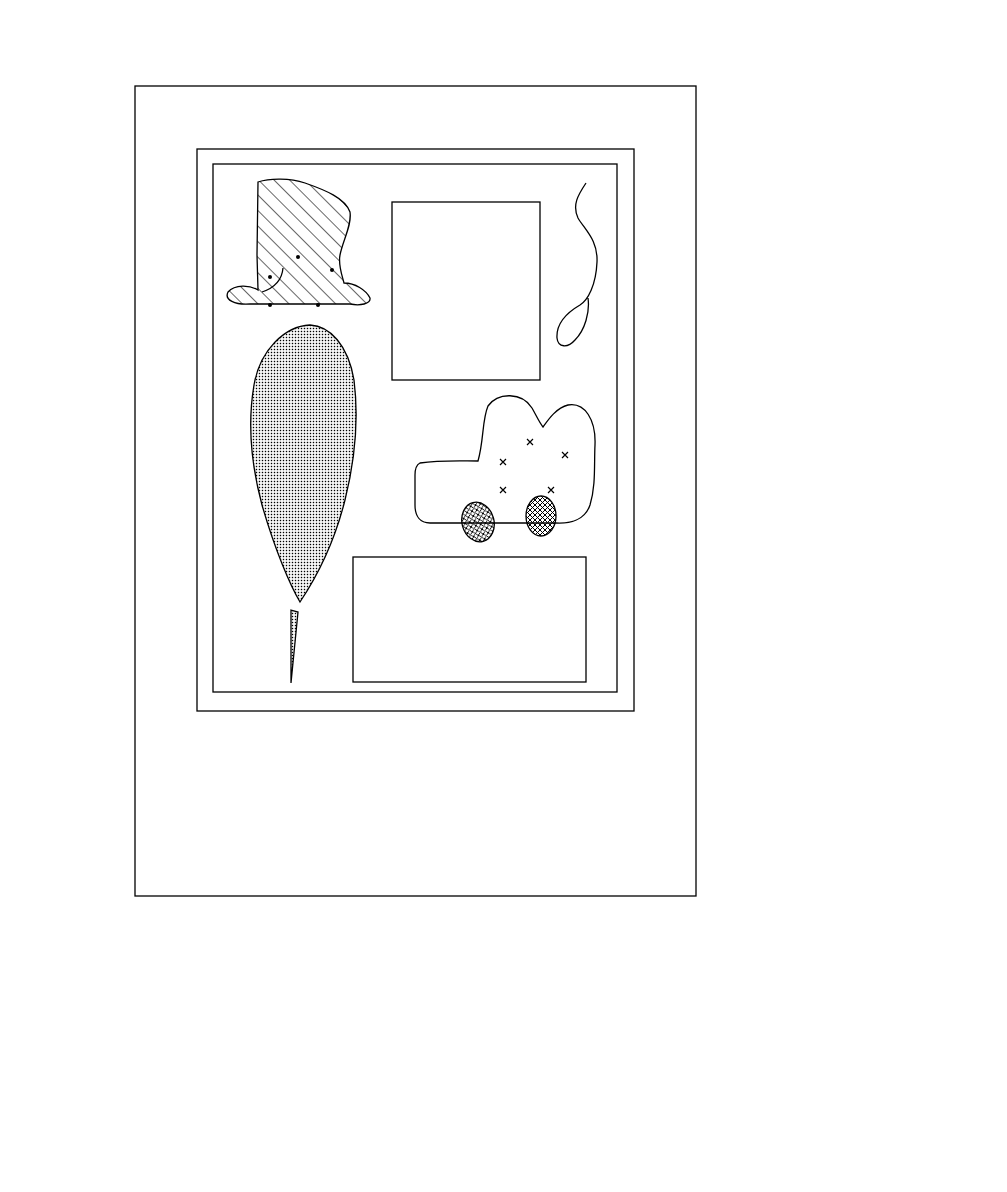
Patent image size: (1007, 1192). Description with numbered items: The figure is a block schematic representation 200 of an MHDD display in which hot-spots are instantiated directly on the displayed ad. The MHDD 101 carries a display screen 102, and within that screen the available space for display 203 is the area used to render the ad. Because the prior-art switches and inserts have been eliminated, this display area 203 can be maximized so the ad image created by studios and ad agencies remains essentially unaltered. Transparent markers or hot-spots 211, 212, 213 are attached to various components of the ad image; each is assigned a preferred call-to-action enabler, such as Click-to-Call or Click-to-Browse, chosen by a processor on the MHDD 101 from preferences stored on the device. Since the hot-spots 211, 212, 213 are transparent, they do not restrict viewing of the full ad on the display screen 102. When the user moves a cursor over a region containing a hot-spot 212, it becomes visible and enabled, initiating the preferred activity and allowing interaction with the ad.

The block schematic representation 200 is at (617, 58).
The MHDD 101 is at (696, 562).
The display screen 102 is at (634, 390).
The available space for display 203 is at (618, 282).
The transparent hot-spot 211 is at (278, 452).
The transparent hot-spot 212 is at (262, 303).
The transparent hot-spot 213 is at (533, 458).